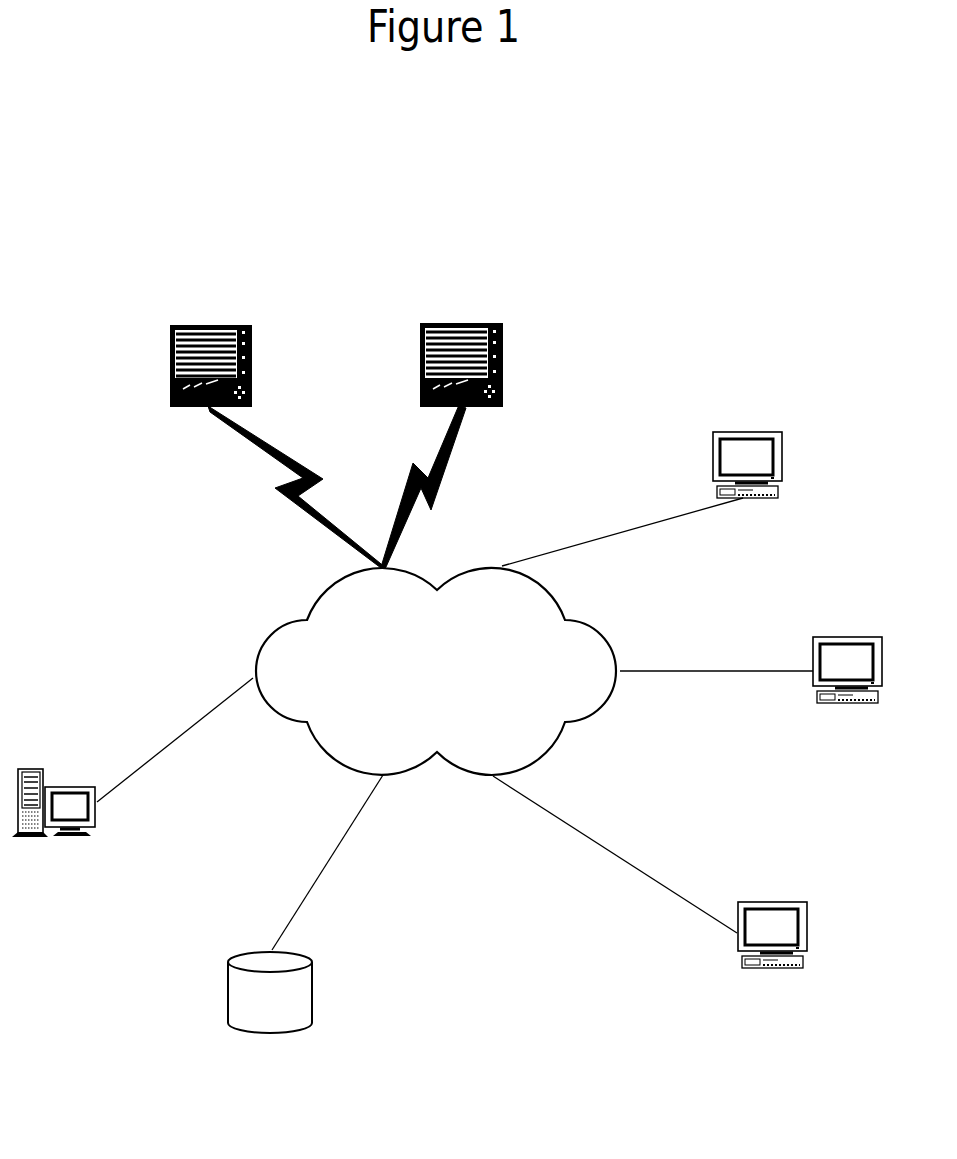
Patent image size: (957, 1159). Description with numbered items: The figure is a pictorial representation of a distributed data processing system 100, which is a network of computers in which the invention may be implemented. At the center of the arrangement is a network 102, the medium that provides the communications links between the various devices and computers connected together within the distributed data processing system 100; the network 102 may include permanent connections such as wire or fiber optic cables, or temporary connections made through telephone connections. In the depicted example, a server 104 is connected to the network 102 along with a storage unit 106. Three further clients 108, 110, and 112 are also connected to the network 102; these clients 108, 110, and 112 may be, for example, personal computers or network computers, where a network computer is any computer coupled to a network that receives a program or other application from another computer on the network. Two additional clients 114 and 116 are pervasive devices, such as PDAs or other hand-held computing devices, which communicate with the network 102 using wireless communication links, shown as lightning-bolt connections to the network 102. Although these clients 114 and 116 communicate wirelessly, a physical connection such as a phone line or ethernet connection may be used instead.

The distributed data processing system 100 is at (474, 1046).
The network 102 is at (455, 681).
The server 104 is at (68, 785).
The storage unit 106 is at (268, 1033).
The client 108 is at (743, 430).
The client 110 is at (848, 637).
The client 112 is at (772, 967).
The client 114 is at (420, 363).
The client 116 is at (170, 365).